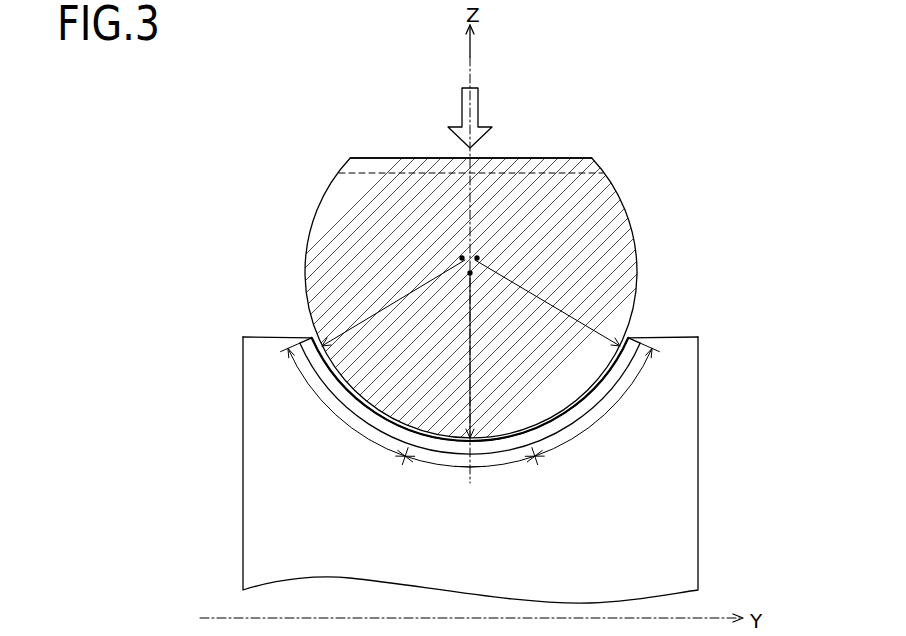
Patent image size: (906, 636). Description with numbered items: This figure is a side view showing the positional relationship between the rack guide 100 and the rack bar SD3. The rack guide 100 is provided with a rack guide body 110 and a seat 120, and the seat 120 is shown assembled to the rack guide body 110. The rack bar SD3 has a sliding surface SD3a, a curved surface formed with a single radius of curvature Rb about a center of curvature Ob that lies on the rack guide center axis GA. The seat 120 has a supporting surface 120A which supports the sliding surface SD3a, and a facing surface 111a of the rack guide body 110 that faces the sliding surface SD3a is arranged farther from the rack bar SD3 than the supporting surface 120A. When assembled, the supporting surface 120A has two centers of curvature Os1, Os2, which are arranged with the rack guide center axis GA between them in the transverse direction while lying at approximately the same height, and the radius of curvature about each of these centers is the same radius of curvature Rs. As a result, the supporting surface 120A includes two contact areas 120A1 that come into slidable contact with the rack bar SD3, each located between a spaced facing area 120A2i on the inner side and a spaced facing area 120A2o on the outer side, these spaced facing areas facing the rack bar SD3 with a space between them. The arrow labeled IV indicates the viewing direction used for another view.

The rack guide 100 is at (439, 410).
The rack guide body 110 is at (673, 512).
The facing surface 111a is at (300, 334).
The seat 120 is at (636, 334).
The supporting surface 120A is at (317, 332).
The contact area 120A1 is at (373, 441).
The spaced facing area on the outer side 120A2o is at (312, 388).
The spaced facing area on the inner side 120A2i is at (478, 468).
The rack bar SD3 is at (610, 238).
The sliding surface SD3a is at (616, 191).
The rack guide center axis GA is at (477, 40).
The viewing direction arrow IV is at (470, 104).
The center of curvature Os1 is at (461, 257).
The center of curvature Os2 is at (478, 258).
The center of curvature of the rack bar Ob is at (471, 275).
The radius of curvature Rs is at (471, 303).
The radius of curvature Rb is at (483, 356).